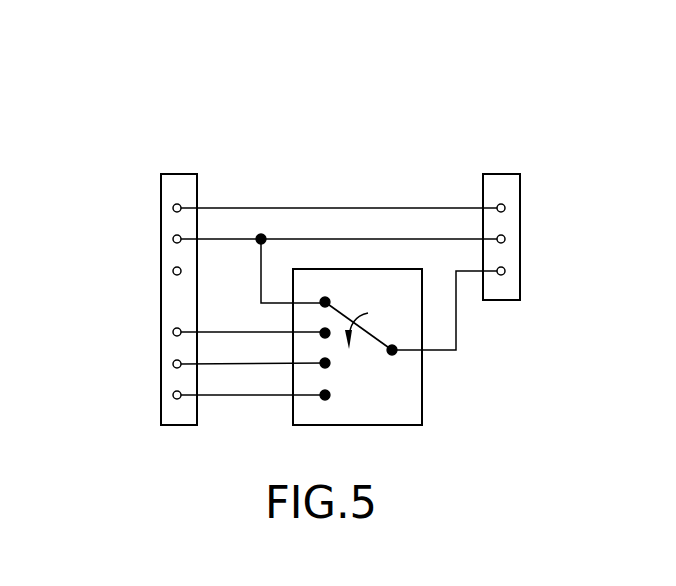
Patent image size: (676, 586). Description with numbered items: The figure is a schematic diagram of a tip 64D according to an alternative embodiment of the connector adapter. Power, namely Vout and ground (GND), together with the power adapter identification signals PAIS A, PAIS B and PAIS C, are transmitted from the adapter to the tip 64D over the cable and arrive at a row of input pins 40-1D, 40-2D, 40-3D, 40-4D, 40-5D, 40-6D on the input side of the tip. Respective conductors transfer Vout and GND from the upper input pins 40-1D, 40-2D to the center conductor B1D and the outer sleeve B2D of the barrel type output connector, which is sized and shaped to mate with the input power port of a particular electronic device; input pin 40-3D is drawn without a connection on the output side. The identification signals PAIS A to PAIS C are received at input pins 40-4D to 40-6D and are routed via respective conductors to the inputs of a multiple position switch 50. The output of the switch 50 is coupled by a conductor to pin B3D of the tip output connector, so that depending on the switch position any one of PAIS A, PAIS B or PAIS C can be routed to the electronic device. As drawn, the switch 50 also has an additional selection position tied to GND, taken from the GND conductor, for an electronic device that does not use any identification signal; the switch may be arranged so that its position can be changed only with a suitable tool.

The tip 64D is at (527, 145).
The input pin 40-1D is at (173, 208).
The input pin 40-2D is at (173, 239).
The input pin 40-3D is at (173, 271).
The input pin 40-4D is at (173, 332).
The input pin 40-5D is at (173, 364).
The input pin 40-6D is at (173, 395).
The center conductor B1D is at (505, 208).
The outer sleeve B2D is at (505, 239).
The pin B3D is at (505, 271).
The multiple position switch 50 is at (430, 425).